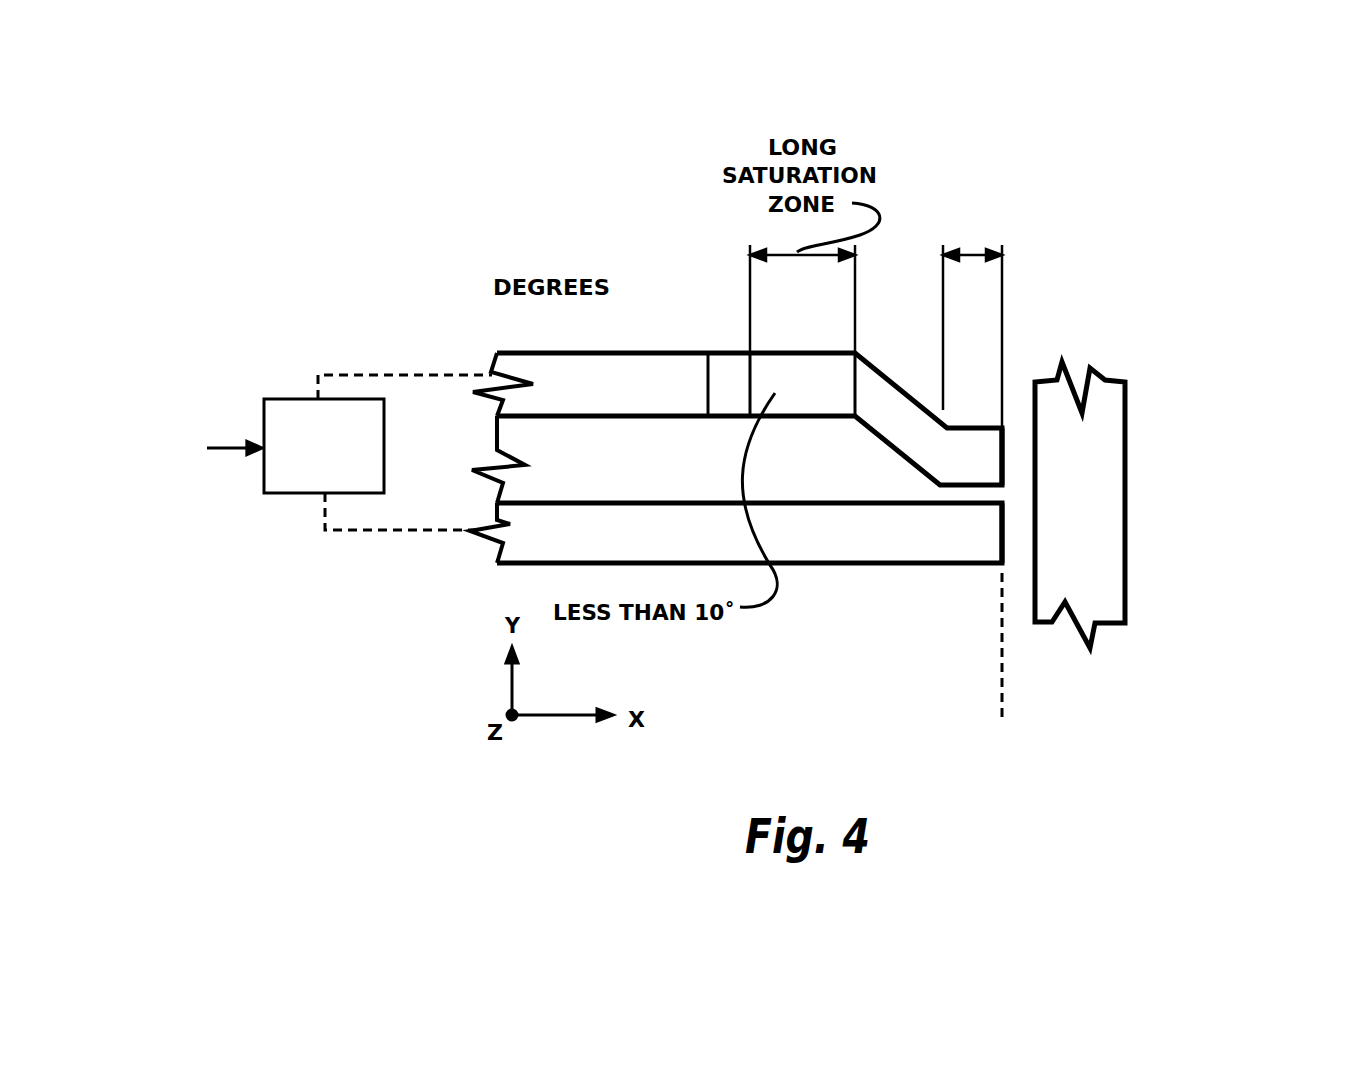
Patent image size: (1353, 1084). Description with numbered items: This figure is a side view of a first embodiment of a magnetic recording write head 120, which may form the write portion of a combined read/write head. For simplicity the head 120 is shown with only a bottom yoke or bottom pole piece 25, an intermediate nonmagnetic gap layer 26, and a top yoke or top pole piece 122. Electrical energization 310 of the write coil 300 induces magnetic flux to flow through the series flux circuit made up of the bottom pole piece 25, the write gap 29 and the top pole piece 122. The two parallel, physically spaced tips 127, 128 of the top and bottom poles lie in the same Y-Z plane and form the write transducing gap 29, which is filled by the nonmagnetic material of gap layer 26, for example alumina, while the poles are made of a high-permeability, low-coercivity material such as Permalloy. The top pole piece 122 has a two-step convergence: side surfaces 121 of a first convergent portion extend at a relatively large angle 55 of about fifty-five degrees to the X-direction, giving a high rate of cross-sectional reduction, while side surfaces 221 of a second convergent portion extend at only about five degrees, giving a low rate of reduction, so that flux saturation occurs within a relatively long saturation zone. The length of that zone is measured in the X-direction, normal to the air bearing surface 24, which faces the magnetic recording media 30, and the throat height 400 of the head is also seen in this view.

The magnetic recording write head 120 is at (362, 790).
The top pole piece 122 is at (978, 446).
The side surfaces of the first convergent portion 121 is at (737, 405).
The side surfaces of the second convergent portion 221 is at (810, 397).
The angle of side surfaces 55 is at (716, 375).
The throat height 400 is at (968, 250).
The intermediate nonmagnetic gap layer 26 is at (510, 437).
The bottom pole piece 25 is at (908, 533).
The write gap 29 is at (968, 493).
The tip of top pole 127 is at (1002, 455).
The tip of bottom pole 128 is at (1002, 528).
The magnetic recording media 30 is at (1107, 592).
The air bearing surface 24 is at (1003, 660).
The write coil 300 is at (272, 493).
The electrical energization 310 is at (231, 445).